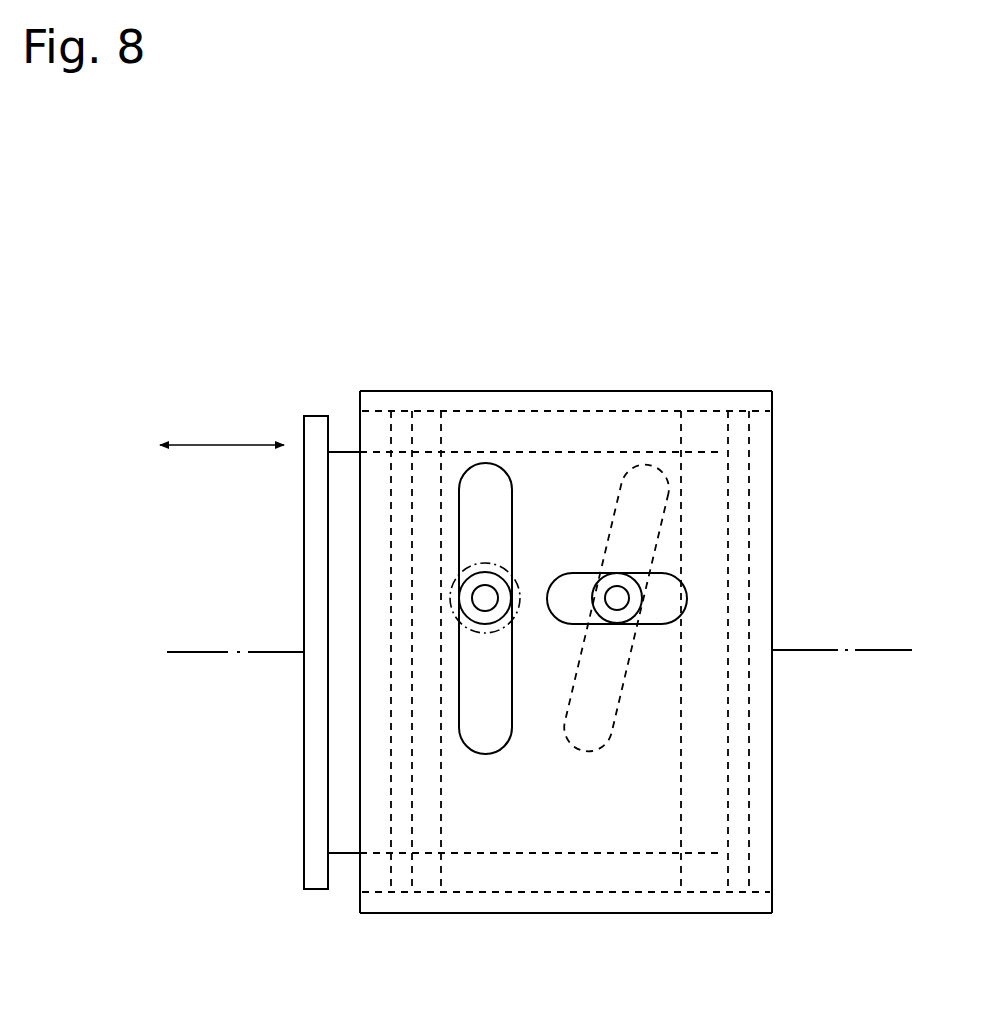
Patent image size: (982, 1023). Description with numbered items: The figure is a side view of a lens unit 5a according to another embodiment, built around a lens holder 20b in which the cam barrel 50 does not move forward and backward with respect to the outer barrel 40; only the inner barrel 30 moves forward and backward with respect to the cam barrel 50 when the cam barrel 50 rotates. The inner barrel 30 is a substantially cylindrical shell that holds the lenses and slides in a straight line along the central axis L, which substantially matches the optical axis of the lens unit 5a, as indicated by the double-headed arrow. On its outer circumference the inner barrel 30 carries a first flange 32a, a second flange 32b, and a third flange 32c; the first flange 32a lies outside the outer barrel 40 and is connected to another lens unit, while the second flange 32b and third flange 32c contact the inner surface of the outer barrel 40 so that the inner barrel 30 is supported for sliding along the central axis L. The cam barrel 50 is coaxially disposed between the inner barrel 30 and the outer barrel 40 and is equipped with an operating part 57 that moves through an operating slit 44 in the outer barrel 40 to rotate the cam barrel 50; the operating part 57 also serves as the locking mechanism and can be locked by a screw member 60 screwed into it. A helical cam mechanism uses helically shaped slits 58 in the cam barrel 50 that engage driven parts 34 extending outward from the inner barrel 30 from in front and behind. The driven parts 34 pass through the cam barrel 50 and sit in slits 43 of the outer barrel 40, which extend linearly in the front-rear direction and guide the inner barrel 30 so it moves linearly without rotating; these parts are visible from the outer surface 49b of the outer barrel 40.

The first flange 32a is at (316, 415).
The inner barrel 30 is at (347, 452).
The second flange 32b is at (403, 410).
The third flange 32c is at (745, 411).
The outer barrel 40 is at (532, 390).
The cam barrel 50 is at (608, 410).
The lens unit 5a is at (679, 382).
The lens holder 20b is at (380, 922).
The outer surface 49b is at (541, 880).
The slit 43 is at (565, 585).
The operating slit 44 is at (488, 742).
The driven part 34 is at (612, 613).
The operating part 57 is at (498, 614).
The screw member 60 is at (470, 629).
The slit 58 is at (592, 757).
The central axis L is at (830, 652).